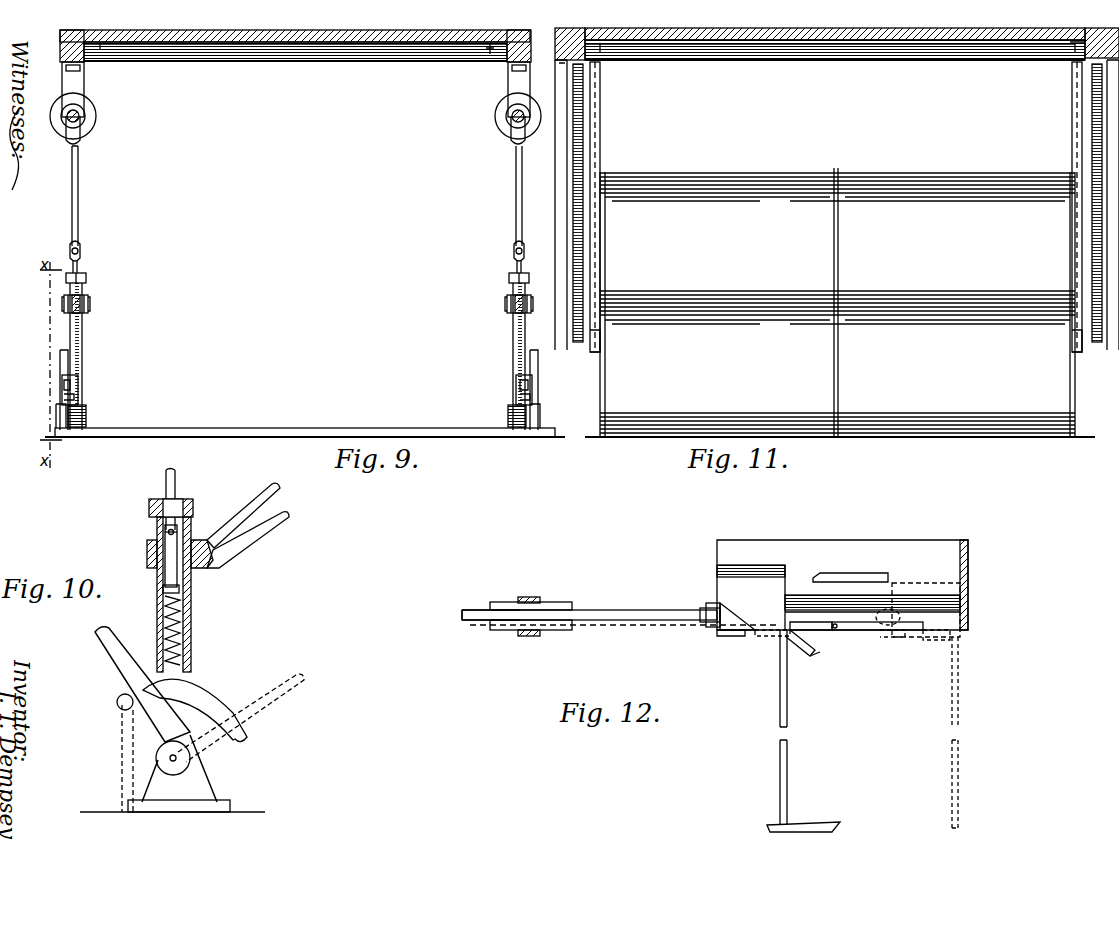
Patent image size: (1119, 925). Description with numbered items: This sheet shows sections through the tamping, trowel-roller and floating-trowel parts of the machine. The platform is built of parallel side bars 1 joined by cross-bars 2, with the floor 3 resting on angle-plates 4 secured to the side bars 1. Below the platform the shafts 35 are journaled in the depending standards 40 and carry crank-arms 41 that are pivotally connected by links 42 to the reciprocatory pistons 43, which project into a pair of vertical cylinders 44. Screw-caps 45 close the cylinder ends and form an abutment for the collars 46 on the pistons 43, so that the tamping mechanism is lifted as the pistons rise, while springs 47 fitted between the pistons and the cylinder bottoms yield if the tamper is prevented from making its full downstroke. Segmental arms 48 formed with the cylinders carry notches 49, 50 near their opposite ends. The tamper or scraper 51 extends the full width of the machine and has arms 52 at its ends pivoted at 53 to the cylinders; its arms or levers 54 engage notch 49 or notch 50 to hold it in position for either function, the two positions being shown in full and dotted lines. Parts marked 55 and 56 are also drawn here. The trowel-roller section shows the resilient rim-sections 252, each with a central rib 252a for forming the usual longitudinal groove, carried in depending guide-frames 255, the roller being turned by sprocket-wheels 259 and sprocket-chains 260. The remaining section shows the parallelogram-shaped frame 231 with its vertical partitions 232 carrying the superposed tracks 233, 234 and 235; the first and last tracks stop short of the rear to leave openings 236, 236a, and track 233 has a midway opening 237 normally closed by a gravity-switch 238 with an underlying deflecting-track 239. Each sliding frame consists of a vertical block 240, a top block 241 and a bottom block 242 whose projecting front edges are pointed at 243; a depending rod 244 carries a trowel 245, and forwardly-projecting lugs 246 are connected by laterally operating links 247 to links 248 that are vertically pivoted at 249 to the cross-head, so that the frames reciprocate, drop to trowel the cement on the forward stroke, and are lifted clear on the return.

In FIG. 9, the side bars 1 is at (60, 44).
In FIG. 11, the side bars 1 is at (556, 62).
In FIG. 9, the cross-bars 2 is at (295, 61).
In FIG. 11, the cross-bars 2 is at (835, 59).
In FIG. 9, the floor 3 is at (352, 57).
In FIG. 11, the floor 3 is at (893, 56).
In FIG. 9, the angle-plates 4 is at (104, 62).
In FIG. 11, the angle-plates 4 is at (604, 55).
In FIG. 9, the shafts 35 is at (88, 116).
In FIG. 9, the depending standards 40 is at (86, 86).
In FIG. 9, the crank-arms 41 is at (84, 140).
In FIG. 9, the links 42 is at (80, 204).
In FIG. 9, the reciprocatory pistons 43 is at (82, 258).
In FIG. 10, the reciprocatory pistons 43 is at (166, 480).
In FIG. 9, the vertical cylinders 44 is at (84, 333).
In FIG. 10, the vertical cylinders 44 is at (191, 606).
In FIG. 9, the screw-caps 45 is at (88, 279).
In FIG. 10, the screw-caps 45 is at (149, 512).
In FIG. 10, the collars 46 is at (180, 532).
In FIG. 10, the springs 47 is at (182, 630).
In FIG. 9, the segmental arms 48 is at (82, 380).
In FIG. 10, the segmental arms 48 is at (207, 688).
In FIG. 9, the notch 49 is at (80, 398).
In FIG. 10, the notch 49 is at (243, 706).
In FIG. 10, the notch 50 is at (118, 700).
In FIG. 9, the tamper or scraper 51 is at (302, 428).
In FIG. 10, the tamper or scraper 51 is at (120, 760).
In FIG. 9, the arms 52 is at (56, 426).
In FIG. 10, the arms 52 is at (173, 758).
In FIG. 10, the pivot 53 is at (192, 759).
In FIG. 9, the arms or levers 54 is at (70, 360).
In FIG. 10, the arms or levers 54 is at (97, 640).
In FIG. 9, the collar 55 is at (90, 302).
In FIG. 10, the collar 55 is at (147, 552).
In FIG. 9, the fork arm 56 is at (62, 304).
In FIG. 10, the fork arm 56 is at (284, 520).
In FIG. 12, the parallelogram-shaped frame 231 is at (988, 585).
In FIG. 12, the vertical partitions 232 is at (842, 574).
In FIG. 12, the track 233 is at (872, 638).
In FIG. 12, the track 234 is at (968, 604).
In FIG. 12, the track 235 is at (852, 572).
In FIG. 12, the opening 236 is at (960, 628).
In FIG. 12, the opening 236a is at (950, 580).
In FIG. 12, the opening 237 is at (802, 647).
In FIG. 12, the gravity-switch 238 is at (830, 632).
In FIG. 12, the deflecting-track 239 is at (825, 660).
In FIG. 12, the vertical block 240 is at (745, 610).
In FIG. 12, the top block 241 is at (717, 569).
In FIG. 12, the bottom block 242 is at (772, 637).
In FIG. 12, the pointed edges 243 is at (750, 634).
In FIG. 12, the vertically-depending rod 244 is at (788, 765).
In FIG. 12, the trowel 245 is at (825, 822).
In FIG. 12, the forwardly-projecting lugs 246 is at (707, 603).
In FIG. 12, the links 247 is at (614, 612).
In FIG. 12, the links 248 is at (473, 612).
In FIG. 12, the vertically-pivoted connections 249 is at (520, 598).
In FIG. 11, the resilient rim-section 252 is at (840, 304).
In FIG. 11, the central rib 252a is at (833, 244).
In FIG. 11, the depending guide-frames 255 is at (578, 350).
In FIG. 11, the sprocket-wheels 259 is at (600, 350).
In FIG. 11, the sprocket-chains 260 is at (600, 152).